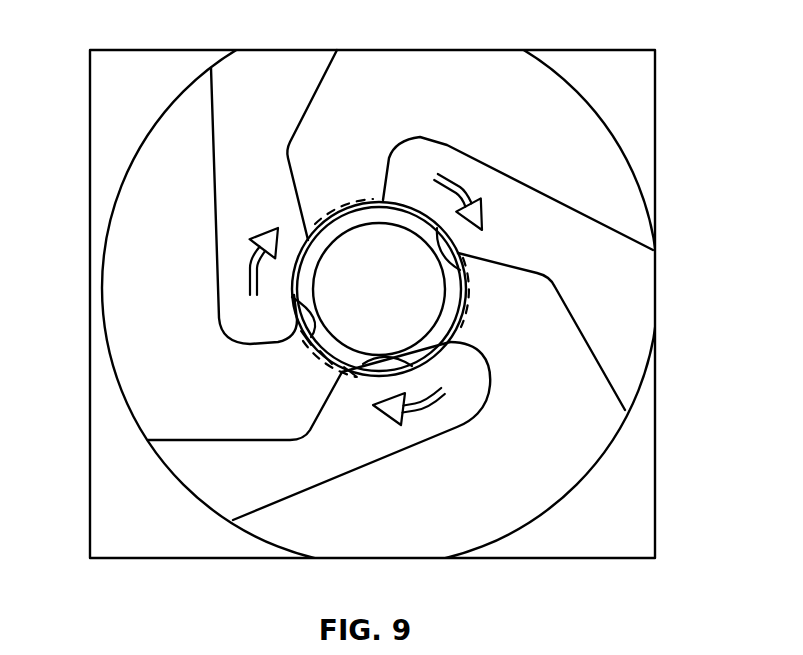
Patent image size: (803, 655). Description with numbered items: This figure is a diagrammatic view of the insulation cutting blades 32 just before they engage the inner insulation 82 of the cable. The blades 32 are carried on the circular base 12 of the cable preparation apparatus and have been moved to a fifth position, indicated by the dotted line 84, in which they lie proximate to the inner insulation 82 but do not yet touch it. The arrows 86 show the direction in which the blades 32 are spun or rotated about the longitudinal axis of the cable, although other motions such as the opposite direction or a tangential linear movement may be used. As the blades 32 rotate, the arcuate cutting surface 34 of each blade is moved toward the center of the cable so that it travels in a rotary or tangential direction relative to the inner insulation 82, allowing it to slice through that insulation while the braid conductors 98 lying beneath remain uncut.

The circular base 12 is at (358, 75).
The insulation cutting blades 32 is at (418, 168).
The arcuate cutting surface 34 is at (307, 338).
The inner insulation 82 is at (325, 357).
The dotted line 84 is at (465, 320).
The arrows 86 is at (457, 188).
The braid conductors 98 is at (373, 238).